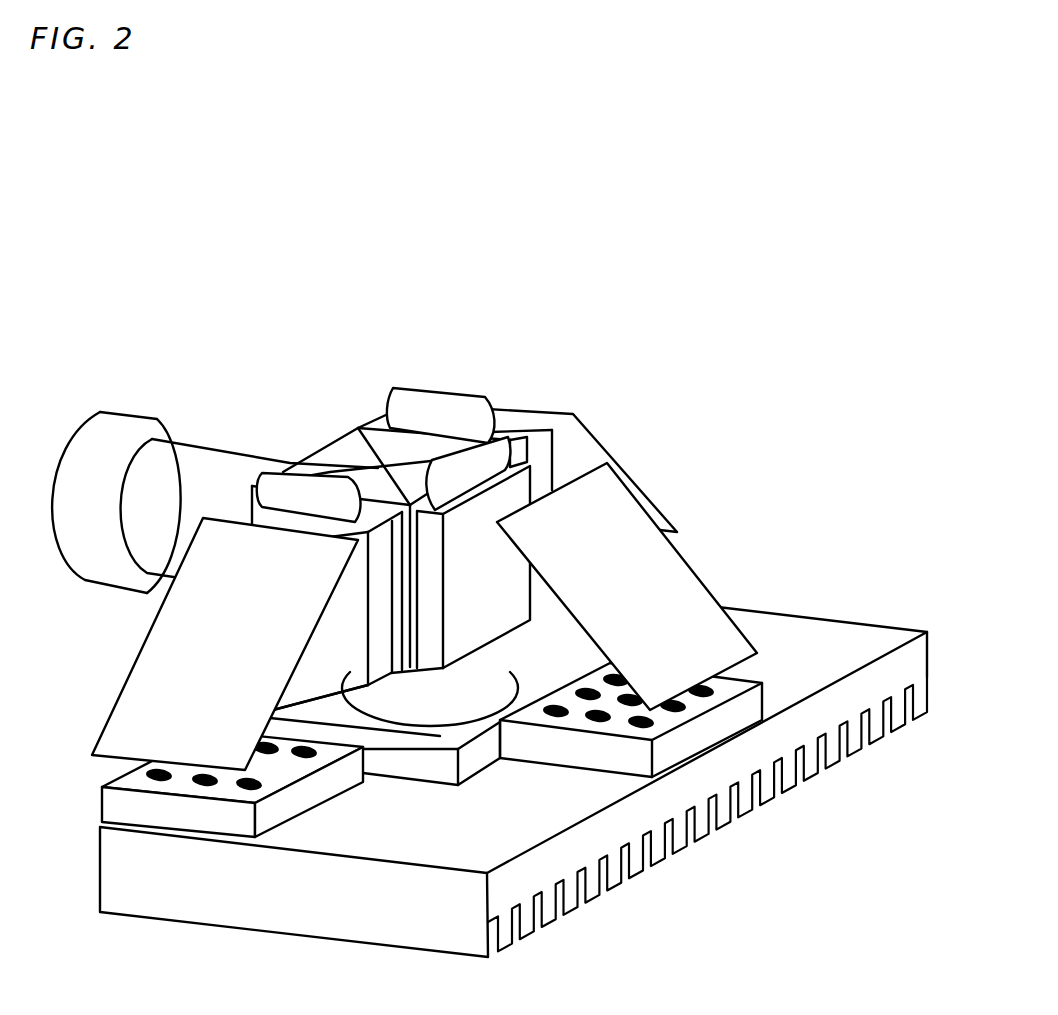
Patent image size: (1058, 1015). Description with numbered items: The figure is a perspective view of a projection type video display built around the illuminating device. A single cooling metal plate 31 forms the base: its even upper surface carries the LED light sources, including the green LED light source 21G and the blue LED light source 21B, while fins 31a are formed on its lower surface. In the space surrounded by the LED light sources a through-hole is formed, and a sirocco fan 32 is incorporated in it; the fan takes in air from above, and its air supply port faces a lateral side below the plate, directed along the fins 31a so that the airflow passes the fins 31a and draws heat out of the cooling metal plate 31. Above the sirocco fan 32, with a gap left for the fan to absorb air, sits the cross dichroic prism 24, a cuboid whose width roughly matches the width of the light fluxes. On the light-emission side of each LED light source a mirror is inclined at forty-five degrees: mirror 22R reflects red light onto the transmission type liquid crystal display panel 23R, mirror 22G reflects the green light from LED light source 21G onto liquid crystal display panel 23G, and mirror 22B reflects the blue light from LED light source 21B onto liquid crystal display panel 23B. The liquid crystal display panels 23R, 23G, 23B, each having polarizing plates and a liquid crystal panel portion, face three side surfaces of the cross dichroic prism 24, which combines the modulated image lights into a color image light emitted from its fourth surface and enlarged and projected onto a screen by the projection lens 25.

The LED light source 21B is at (165, 820).
The LED light source 21G is at (707, 737).
The mirror 22B is at (150, 645).
The mirror 22G is at (688, 577).
The mirror 22R is at (572, 417).
The liquid crystal display panel 23B is at (330, 668).
The liquid crystal display panel 23G is at (493, 618).
The liquid crystal display panel 23R is at (523, 432).
The cross dichroic prism 24 is at (342, 443).
The projection lens 25 is at (238, 463).
The cooling metal plate 31 is at (858, 633).
The fins 31a is at (580, 902).
The sirocco fan 32 is at (430, 772).